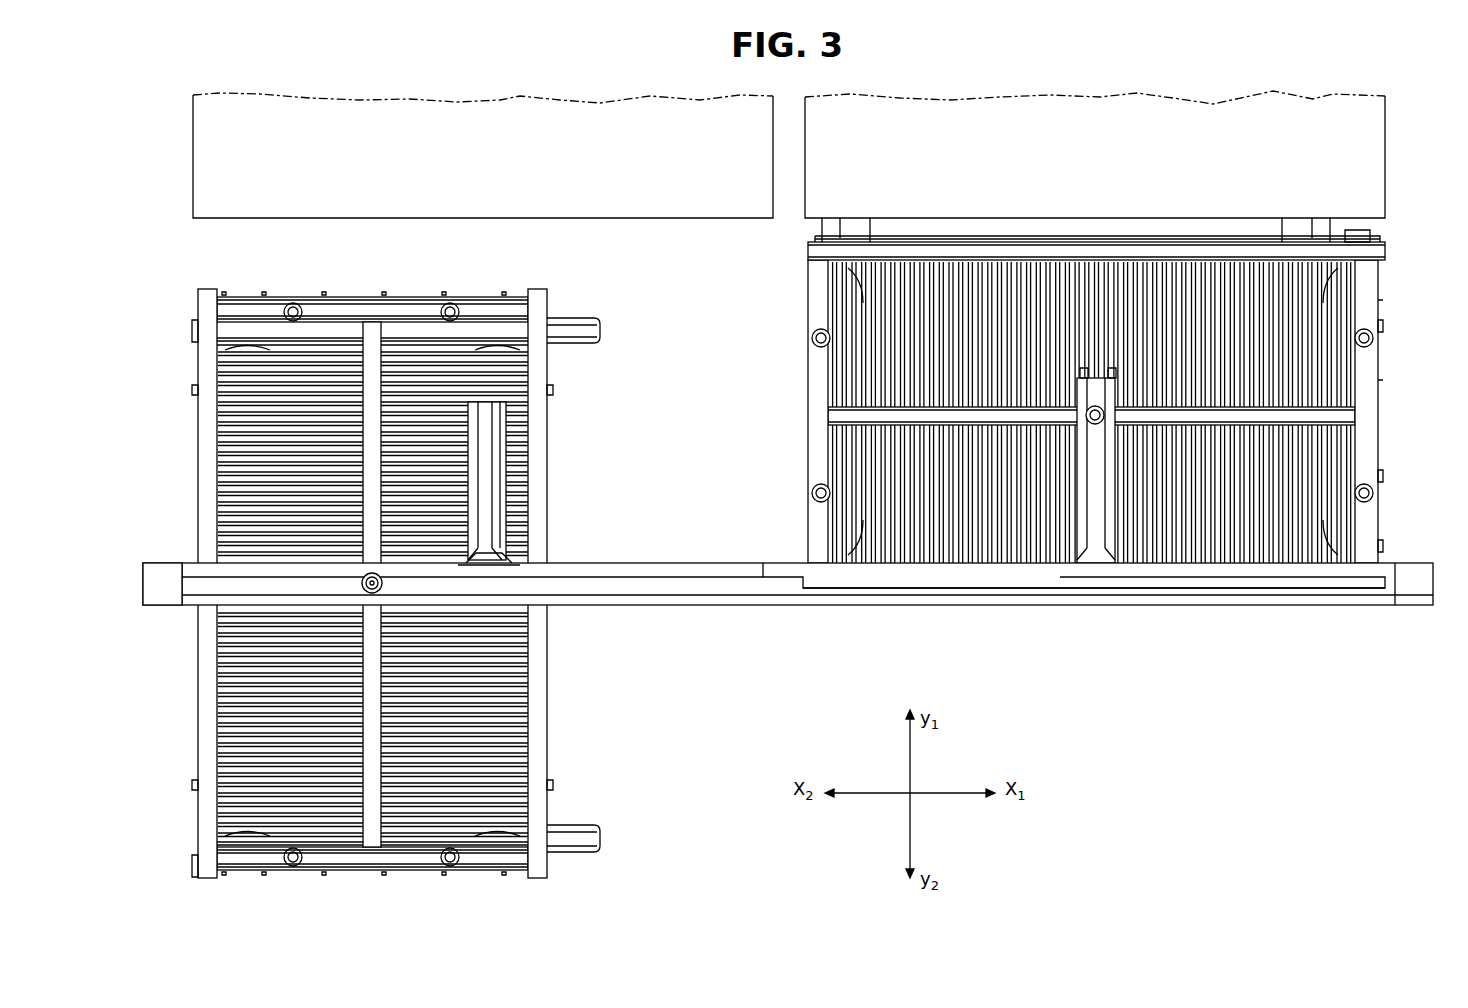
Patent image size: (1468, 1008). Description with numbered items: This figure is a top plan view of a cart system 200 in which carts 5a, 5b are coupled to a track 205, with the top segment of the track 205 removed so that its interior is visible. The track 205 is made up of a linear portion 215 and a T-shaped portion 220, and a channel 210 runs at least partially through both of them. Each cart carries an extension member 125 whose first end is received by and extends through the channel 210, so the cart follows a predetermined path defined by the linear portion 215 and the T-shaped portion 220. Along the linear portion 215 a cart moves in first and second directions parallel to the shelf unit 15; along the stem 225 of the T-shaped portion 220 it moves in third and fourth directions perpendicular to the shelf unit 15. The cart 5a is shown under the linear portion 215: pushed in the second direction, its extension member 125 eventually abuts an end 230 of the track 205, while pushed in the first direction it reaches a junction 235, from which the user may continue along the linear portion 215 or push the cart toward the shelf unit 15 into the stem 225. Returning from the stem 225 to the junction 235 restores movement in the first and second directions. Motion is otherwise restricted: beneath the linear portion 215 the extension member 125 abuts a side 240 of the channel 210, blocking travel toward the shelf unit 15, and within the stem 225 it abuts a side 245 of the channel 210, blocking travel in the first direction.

The shelf unit 15 is at (472, 167).
The cart 5a is at (356, 583).
The cart 5b is at (1131, 472).
The side of the channel 245 is at (492, 421).
The stem 225 is at (505, 472).
The side of the channel 240 is at (568, 573).
The end of the track 230 is at (143, 583).
The channel 210 is at (675, 585).
The track 205 is at (769, 617).
The linear portion 215 is at (970, 610).
The T-shaped portion 220 is at (1090, 625).
The cart system 200 is at (756, 712).
The extension member 125 is at (366, 588).
The junction 235 is at (478, 583).